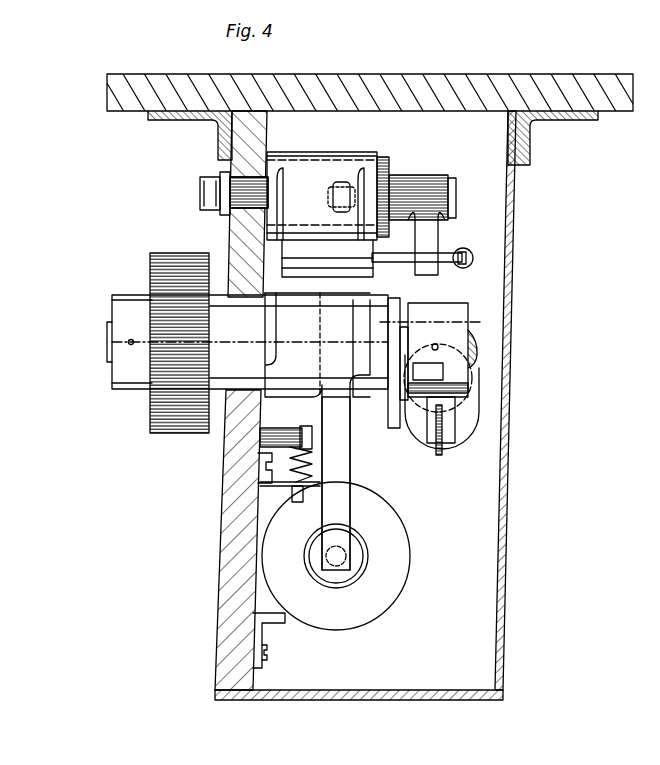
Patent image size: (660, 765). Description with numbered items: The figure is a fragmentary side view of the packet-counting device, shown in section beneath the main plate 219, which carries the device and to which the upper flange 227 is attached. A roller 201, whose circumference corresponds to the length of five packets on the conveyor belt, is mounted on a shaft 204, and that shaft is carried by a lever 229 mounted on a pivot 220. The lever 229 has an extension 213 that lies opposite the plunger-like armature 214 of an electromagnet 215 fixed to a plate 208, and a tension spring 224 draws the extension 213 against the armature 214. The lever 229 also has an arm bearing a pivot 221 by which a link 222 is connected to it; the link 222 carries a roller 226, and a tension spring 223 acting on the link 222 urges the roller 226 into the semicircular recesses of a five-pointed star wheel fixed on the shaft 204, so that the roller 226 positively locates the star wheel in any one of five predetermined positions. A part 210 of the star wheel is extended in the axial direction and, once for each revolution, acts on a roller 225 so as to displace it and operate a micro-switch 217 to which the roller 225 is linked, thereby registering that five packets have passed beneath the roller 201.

The main plate 219 is at (150, 85).
The flange 227 is at (188, 120).
The lever 229 is at (305, 264).
The pivot 220 is at (316, 178).
The pivot 221 is at (406, 192).
The link 222 is at (430, 230).
The tension spring 223 is at (474, 257).
The roller 226 is at (392, 336).
The shaft 204 is at (108, 334).
The part of the star wheel 210 is at (445, 372).
The roller 201 is at (182, 398).
The tension spring 224 is at (262, 458).
The extension 213 is at (340, 480).
The micro-switch 217 is at (462, 430).
The roller 225 is at (438, 456).
The plate 208 is at (240, 556).
The electromagnet 215 is at (398, 568).
The armature 214 is at (338, 563).